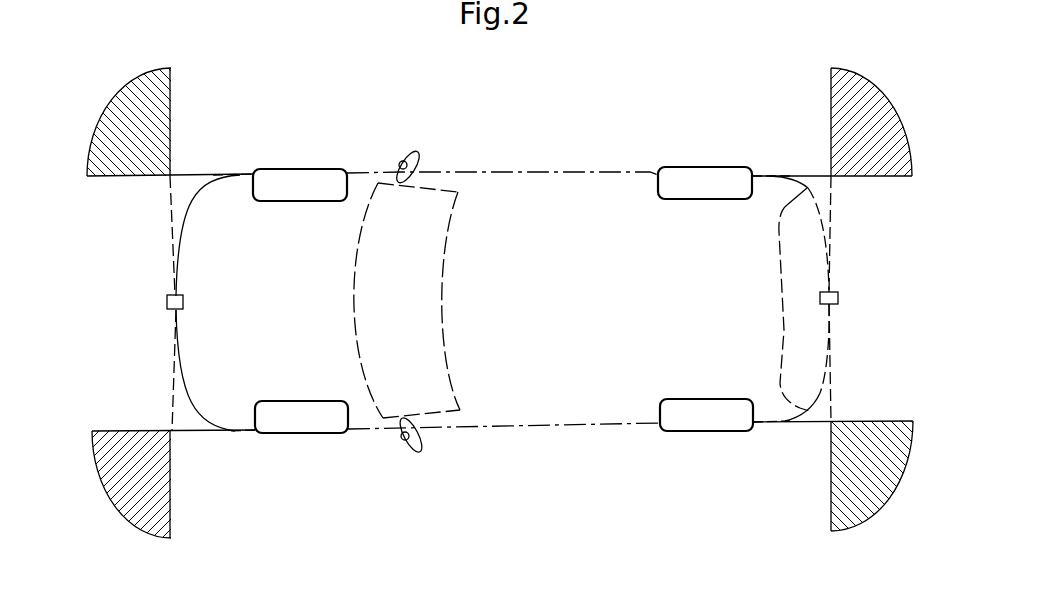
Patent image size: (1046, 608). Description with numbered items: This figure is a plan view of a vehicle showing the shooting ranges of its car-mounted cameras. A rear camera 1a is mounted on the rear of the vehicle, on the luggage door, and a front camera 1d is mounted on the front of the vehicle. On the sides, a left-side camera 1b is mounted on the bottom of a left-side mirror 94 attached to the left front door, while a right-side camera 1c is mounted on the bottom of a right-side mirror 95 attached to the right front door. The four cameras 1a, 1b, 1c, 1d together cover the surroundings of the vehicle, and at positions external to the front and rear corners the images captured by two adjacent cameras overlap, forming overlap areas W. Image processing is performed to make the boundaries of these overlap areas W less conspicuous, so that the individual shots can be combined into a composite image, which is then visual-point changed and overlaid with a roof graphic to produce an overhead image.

The rear camera 1a is at (838, 298).
The left-side camera 1b is at (415, 438).
The right-side camera 1c is at (412, 163).
The front camera 1d is at (167, 302).
The left-side mirror 94 is at (403, 452).
The right-side mirror 95 is at (405, 152).
The overlap area W is at (155, 128).